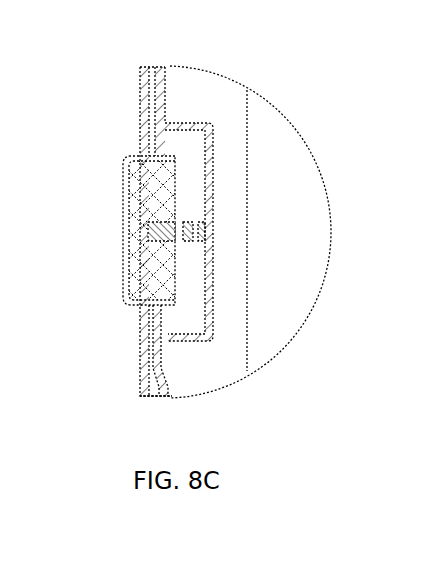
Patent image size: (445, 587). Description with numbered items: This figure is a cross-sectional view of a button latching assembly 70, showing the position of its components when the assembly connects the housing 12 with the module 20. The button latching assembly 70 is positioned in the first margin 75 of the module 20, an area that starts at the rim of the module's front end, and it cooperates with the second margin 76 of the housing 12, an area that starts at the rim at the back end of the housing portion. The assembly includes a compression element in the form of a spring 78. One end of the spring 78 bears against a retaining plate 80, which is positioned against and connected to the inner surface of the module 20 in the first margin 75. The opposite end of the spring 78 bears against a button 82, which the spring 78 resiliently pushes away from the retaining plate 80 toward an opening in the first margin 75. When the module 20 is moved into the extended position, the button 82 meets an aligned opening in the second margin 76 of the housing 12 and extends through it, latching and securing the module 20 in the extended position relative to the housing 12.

The housing 12 is at (140, 112).
The module 20 is at (170, 398).
The button latching assembly 70 is at (327, 188).
The first margin 75 is at (163, 88).
The second margin 76 is at (147, 362).
The spring 78 is at (190, 222).
The retaining plate 80 is at (213, 297).
The button 82 is at (125, 218).